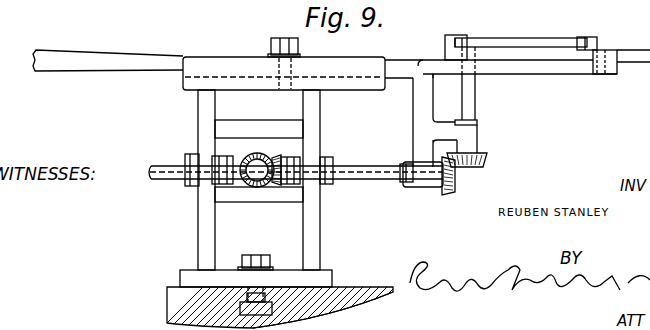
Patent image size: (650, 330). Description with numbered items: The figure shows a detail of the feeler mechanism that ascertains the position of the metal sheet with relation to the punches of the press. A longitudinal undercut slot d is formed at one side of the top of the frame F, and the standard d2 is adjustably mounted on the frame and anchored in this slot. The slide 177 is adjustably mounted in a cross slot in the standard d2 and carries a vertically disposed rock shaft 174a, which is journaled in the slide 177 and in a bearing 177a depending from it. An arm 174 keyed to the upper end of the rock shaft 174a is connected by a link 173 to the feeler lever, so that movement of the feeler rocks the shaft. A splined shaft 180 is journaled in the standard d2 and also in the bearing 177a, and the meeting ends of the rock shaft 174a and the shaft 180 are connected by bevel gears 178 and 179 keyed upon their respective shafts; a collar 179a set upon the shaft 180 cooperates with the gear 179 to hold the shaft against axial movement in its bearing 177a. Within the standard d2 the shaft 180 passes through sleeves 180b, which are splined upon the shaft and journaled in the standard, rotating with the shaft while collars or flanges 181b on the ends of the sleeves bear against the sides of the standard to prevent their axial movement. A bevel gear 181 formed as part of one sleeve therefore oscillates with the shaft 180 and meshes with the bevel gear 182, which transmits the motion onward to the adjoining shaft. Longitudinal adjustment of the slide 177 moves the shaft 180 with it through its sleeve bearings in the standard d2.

The slide 177 is at (157, 72).
The standard d2 is at (316, 120).
The frame F is at (167, 298).
The undercut slot d is at (310, 323).
The splined shaft 180 is at (348, 181).
The sleeve 180b is at (202, 160).
The collar 181b is at (183, 185).
The bevel gear 182 is at (243, 190).
The bevel gear 181 is at (277, 192).
The bearing 177a is at (414, 137).
The arm 174 is at (443, 53).
The link 173 is at (648, 47).
The rock shaft 174a is at (474, 105).
The bevel gear 178 is at (484, 164).
The bevel gear 179 is at (452, 193).
The collar 179a is at (406, 188).